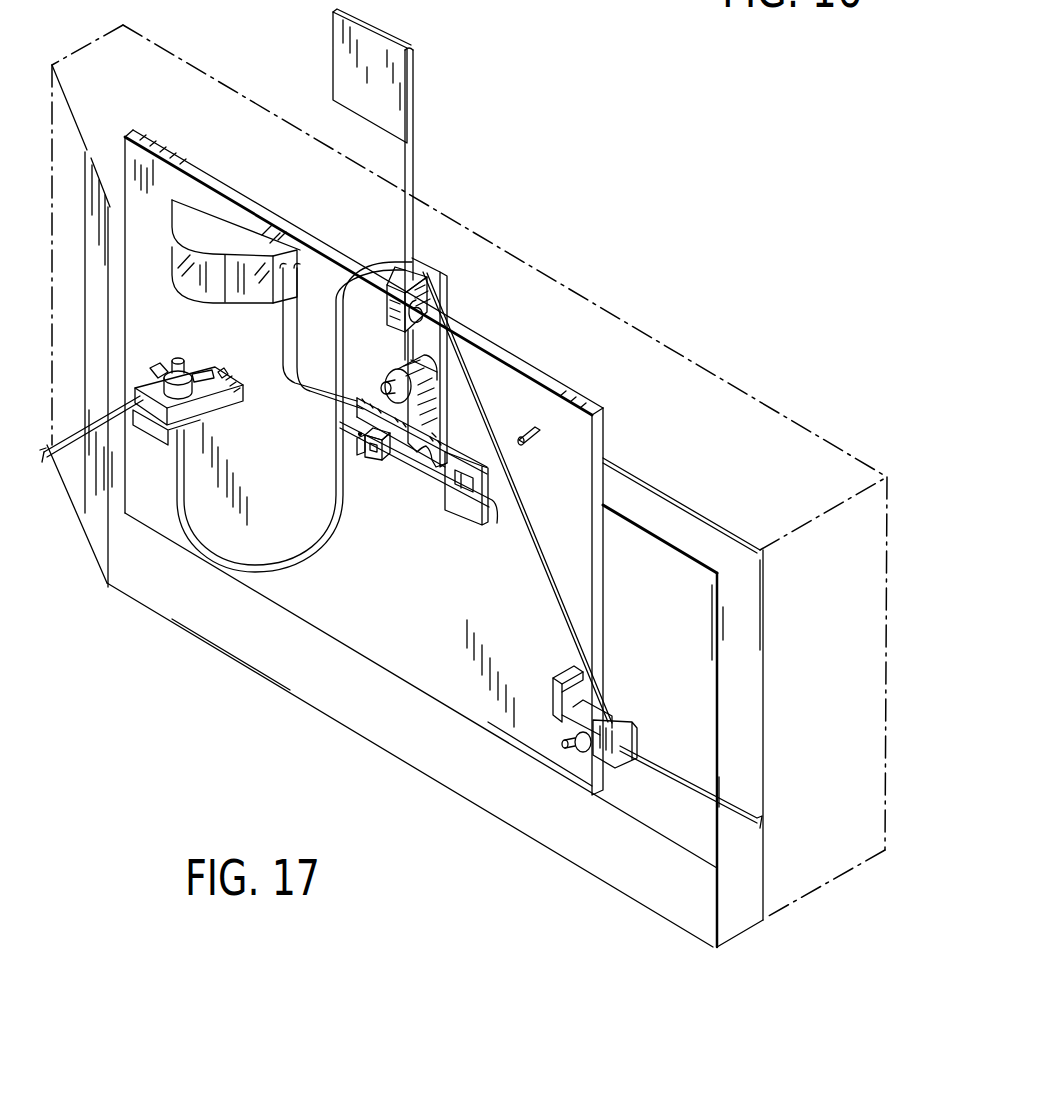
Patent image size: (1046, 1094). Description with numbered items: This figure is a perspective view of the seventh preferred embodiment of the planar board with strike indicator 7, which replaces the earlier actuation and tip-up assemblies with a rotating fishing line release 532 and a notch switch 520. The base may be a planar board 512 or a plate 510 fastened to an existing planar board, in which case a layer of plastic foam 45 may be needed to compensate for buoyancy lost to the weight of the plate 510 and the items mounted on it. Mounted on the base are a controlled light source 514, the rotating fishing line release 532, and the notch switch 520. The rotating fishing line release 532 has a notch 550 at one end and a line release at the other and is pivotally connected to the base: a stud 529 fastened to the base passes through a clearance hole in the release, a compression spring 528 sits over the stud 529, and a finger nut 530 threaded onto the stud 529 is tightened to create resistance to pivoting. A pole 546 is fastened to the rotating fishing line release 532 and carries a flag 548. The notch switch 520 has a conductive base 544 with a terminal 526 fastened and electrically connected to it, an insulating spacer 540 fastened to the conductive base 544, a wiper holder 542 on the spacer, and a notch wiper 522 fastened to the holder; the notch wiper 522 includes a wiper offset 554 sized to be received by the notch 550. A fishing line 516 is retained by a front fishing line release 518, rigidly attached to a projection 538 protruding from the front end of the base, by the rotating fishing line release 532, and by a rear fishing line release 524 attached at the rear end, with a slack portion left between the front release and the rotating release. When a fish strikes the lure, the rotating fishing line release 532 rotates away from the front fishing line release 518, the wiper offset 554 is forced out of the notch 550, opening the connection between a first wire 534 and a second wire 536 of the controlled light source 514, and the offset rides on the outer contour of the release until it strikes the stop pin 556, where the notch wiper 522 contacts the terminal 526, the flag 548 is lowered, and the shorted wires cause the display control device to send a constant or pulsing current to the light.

The planar board with strike indicator 7 is at (249, 718).
The layer of plastic foam 45 is at (578, 867).
The plate 510 is at (594, 641).
The planar board 512 is at (838, 877).
The controlled light source 514 is at (190, 224).
The fishing line 516 is at (97, 427).
The front fishing line release 518 is at (150, 390).
The notch switch 520 is at (400, 473).
The notch wiper 522 is at (497, 524).
The rear fishing line release 524 is at (610, 765).
The terminal 526 is at (468, 496).
The compression spring 528 is at (438, 410).
The stud 529 is at (446, 330).
The finger nut 530 is at (432, 386).
The rotating fishing line release 532 is at (432, 433).
The first wire 534 is at (283, 368).
The second wire 536 is at (297, 297).
The projection 538 is at (222, 372).
The insulating spacer 540 is at (378, 460).
The wiper holder 542 is at (358, 437).
The conductive base 544 is at (487, 478).
The pole 546 is at (411, 162).
The flag 548 is at (386, 42).
The notch 550 is at (443, 472).
The wiper offset 554 is at (424, 466).
The stop pin 556 is at (535, 445).